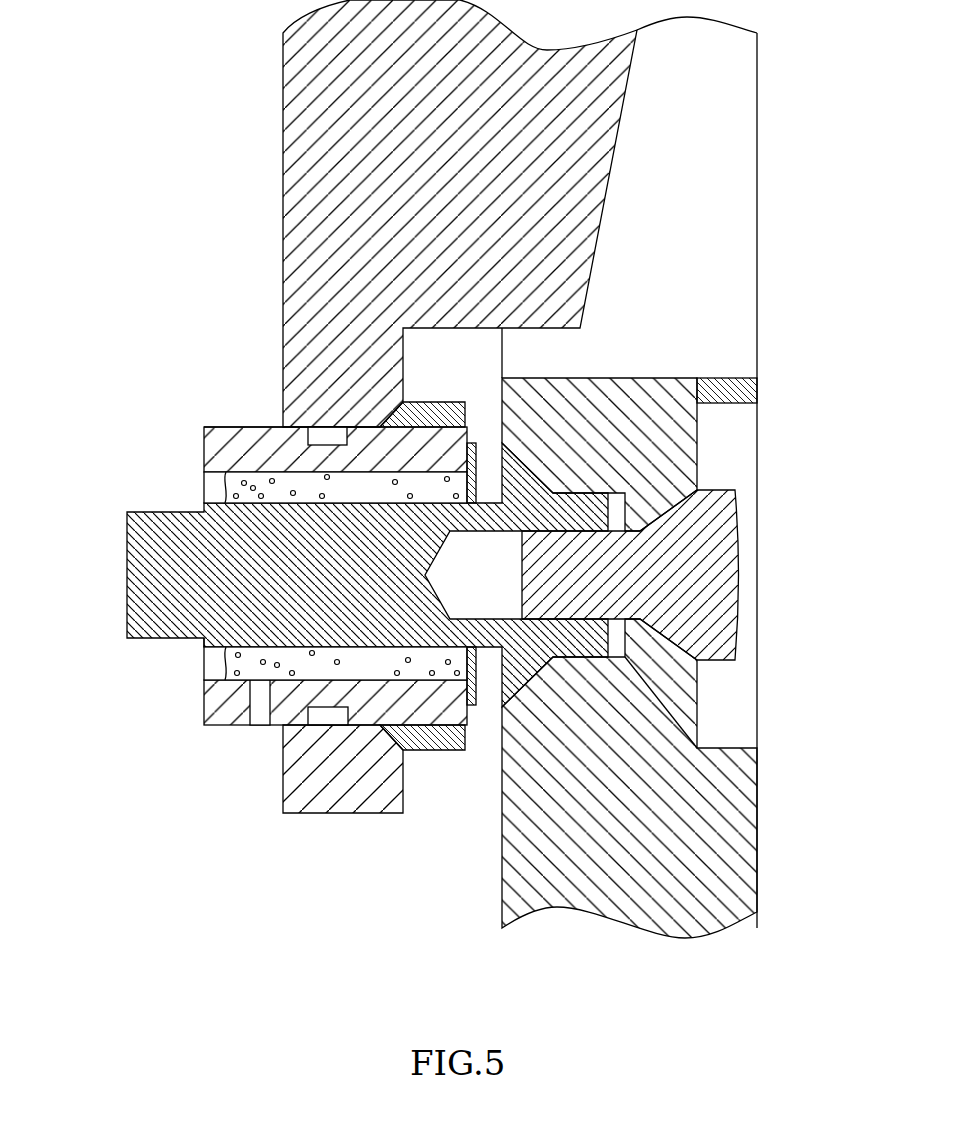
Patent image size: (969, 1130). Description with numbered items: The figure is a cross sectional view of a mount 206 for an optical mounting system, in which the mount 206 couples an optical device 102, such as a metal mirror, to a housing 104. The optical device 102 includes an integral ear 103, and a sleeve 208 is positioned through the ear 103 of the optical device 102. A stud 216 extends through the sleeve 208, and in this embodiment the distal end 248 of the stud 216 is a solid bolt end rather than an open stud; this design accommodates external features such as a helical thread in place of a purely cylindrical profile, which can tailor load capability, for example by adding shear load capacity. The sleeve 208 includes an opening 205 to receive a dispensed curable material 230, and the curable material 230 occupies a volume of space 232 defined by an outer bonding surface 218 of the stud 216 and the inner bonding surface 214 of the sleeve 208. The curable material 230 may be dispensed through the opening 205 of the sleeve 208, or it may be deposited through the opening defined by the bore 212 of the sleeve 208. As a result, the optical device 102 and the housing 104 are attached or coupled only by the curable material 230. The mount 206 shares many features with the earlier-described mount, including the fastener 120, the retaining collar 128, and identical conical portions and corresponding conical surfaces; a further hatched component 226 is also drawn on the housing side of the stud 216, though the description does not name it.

The mount 206 is at (117, 84).
The optical device 102 is at (278, 147).
The housing 104 is at (770, 782).
The retaining nut 226 is at (502, 378).
The fastener 120 is at (748, 576).
The distal end 248 is at (122, 576).
The volume of space 232 is at (202, 475).
The opening 205 is at (253, 718).
The inner bonding surface 214 is at (390, 500).
The bore 212 is at (203, 491).
The outer bonding surface 218 is at (434, 500).
The sleeve 208 is at (200, 425).
The curable material 230 is at (253, 482).
The stud 216 is at (201, 657).
The ear 103 is at (298, 822).
The retaining collar 128 is at (413, 758).